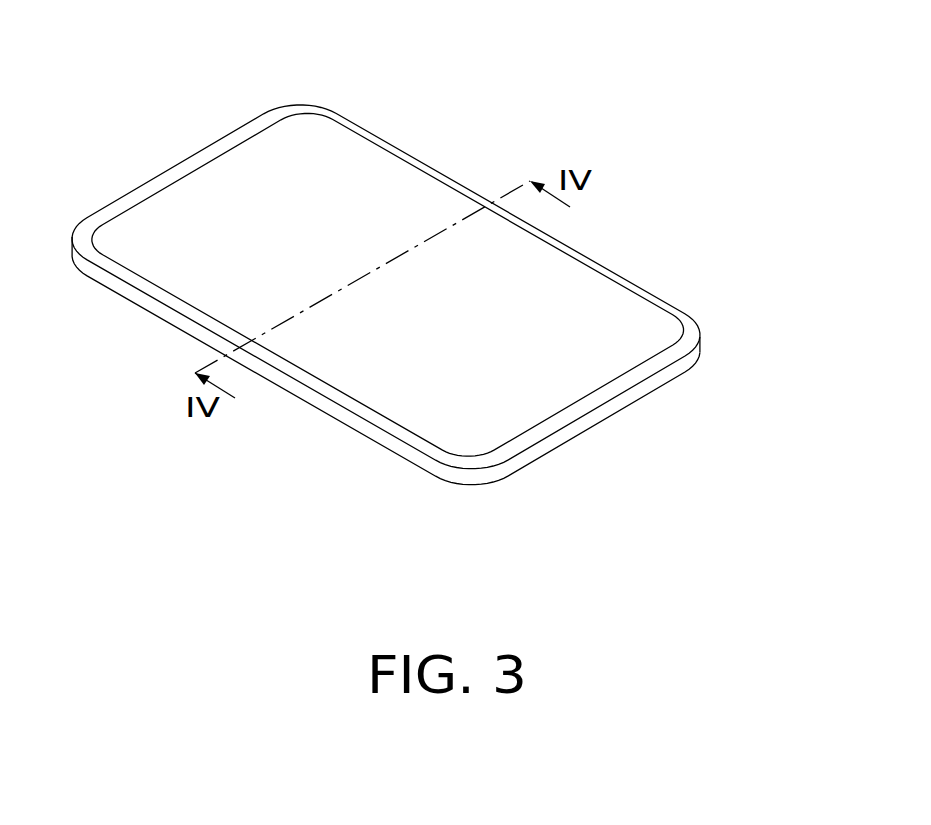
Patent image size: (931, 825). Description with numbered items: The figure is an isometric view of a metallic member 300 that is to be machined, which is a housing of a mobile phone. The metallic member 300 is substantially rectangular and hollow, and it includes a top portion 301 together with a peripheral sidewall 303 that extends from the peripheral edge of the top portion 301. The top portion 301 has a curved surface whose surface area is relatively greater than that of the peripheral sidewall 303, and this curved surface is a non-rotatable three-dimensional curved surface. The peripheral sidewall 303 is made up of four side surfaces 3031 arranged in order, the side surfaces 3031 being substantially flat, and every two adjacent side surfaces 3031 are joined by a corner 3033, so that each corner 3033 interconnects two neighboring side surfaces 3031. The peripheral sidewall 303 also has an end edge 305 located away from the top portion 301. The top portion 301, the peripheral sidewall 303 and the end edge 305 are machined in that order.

The metallic member 300 is at (335, 153).
The top portion 301 is at (578, 290).
The peripheral sidewall 303 is at (443, 373).
The side surface 3031 is at (568, 435).
The corner 3033 is at (702, 347).
The end edge 305 is at (533, 467).